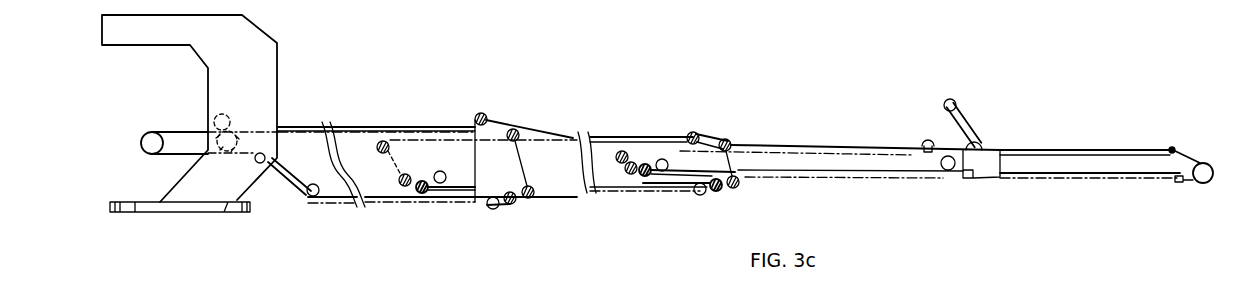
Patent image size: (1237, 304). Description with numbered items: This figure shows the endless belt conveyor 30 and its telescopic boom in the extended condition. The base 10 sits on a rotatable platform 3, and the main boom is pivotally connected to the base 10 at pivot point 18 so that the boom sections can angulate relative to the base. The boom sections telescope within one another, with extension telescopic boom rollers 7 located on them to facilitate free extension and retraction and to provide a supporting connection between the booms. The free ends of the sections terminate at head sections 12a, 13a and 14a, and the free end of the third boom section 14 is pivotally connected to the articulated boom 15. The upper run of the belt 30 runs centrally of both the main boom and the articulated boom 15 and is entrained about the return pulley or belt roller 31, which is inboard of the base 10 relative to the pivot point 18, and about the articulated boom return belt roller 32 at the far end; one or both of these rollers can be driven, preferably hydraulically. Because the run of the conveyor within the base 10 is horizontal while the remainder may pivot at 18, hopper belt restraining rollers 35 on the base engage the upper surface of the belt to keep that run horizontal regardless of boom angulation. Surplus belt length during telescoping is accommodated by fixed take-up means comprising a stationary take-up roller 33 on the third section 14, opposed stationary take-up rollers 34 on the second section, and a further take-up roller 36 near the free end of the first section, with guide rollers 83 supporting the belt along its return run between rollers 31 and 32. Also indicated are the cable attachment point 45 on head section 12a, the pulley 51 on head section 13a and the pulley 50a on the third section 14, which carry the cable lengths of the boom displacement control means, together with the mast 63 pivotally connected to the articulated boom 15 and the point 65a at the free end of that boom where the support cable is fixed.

The rotatable platform 3 is at (149, 202).
The extension telescopic boom rollers 7 is at (400, 185).
The base 10 is at (273, 40).
The head section 12a is at (500, 120).
The head section 13a is at (717, 136).
The third boom section 14 is at (810, 147).
The head section 14a is at (945, 179).
The articulated boom 15 is at (1080, 150).
The pivot point 18 is at (233, 128).
The endless belt conveyor 30 is at (405, 127).
The return pulley or belt roller 31 is at (151, 140).
The articulated boom return belt roller 32 is at (1205, 183).
The stationary take-up roller 33 is at (642, 183).
The opposed stationary take-up rollers 34 is at (425, 193).
The hopper belt restraining rollers 35 is at (211, 118).
The take-up roller 36 is at (512, 204).
The cable attachment point 45 is at (485, 114).
The pulley 50a is at (926, 141).
The pulley 51 is at (692, 132).
The mast 63 is at (972, 126).
The support cable attachment point 65a is at (1170, 148).
The guide rollers 83 is at (308, 203).